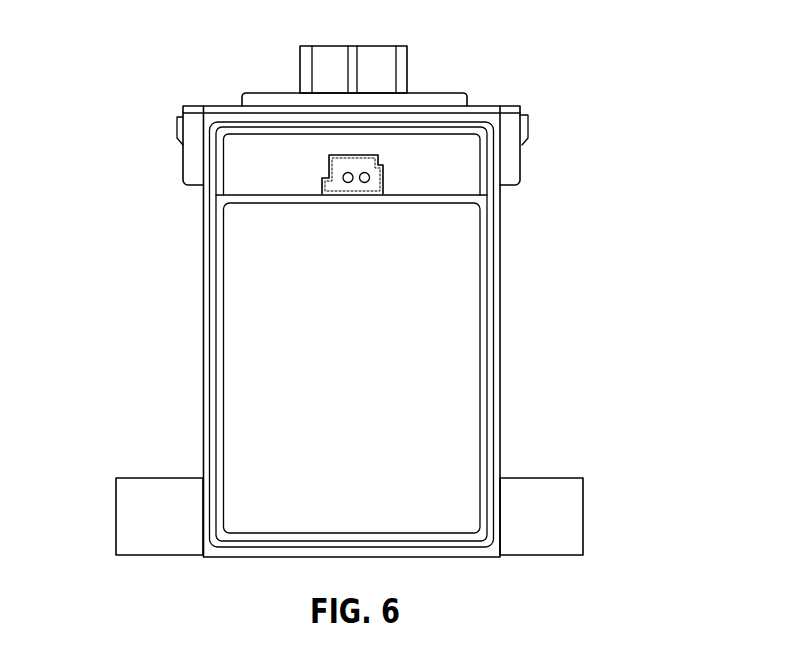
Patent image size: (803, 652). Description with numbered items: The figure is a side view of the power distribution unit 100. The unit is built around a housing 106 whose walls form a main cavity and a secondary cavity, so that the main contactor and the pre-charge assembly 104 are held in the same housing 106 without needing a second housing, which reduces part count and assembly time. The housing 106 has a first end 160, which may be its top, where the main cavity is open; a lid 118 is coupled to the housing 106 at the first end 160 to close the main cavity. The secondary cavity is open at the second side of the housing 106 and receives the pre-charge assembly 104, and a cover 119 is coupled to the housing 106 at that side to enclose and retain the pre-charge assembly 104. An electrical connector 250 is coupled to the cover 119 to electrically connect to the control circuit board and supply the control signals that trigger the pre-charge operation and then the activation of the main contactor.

The power distribution unit 100 is at (376, 279).
The pre-charge assembly 104 is at (406, 311).
The housing 106 is at (182, 163).
The lid 118 is at (294, 40).
The cover 119 is at (247, 349).
The first end 160 is at (495, 105).
The electrical connector 250 is at (377, 184).